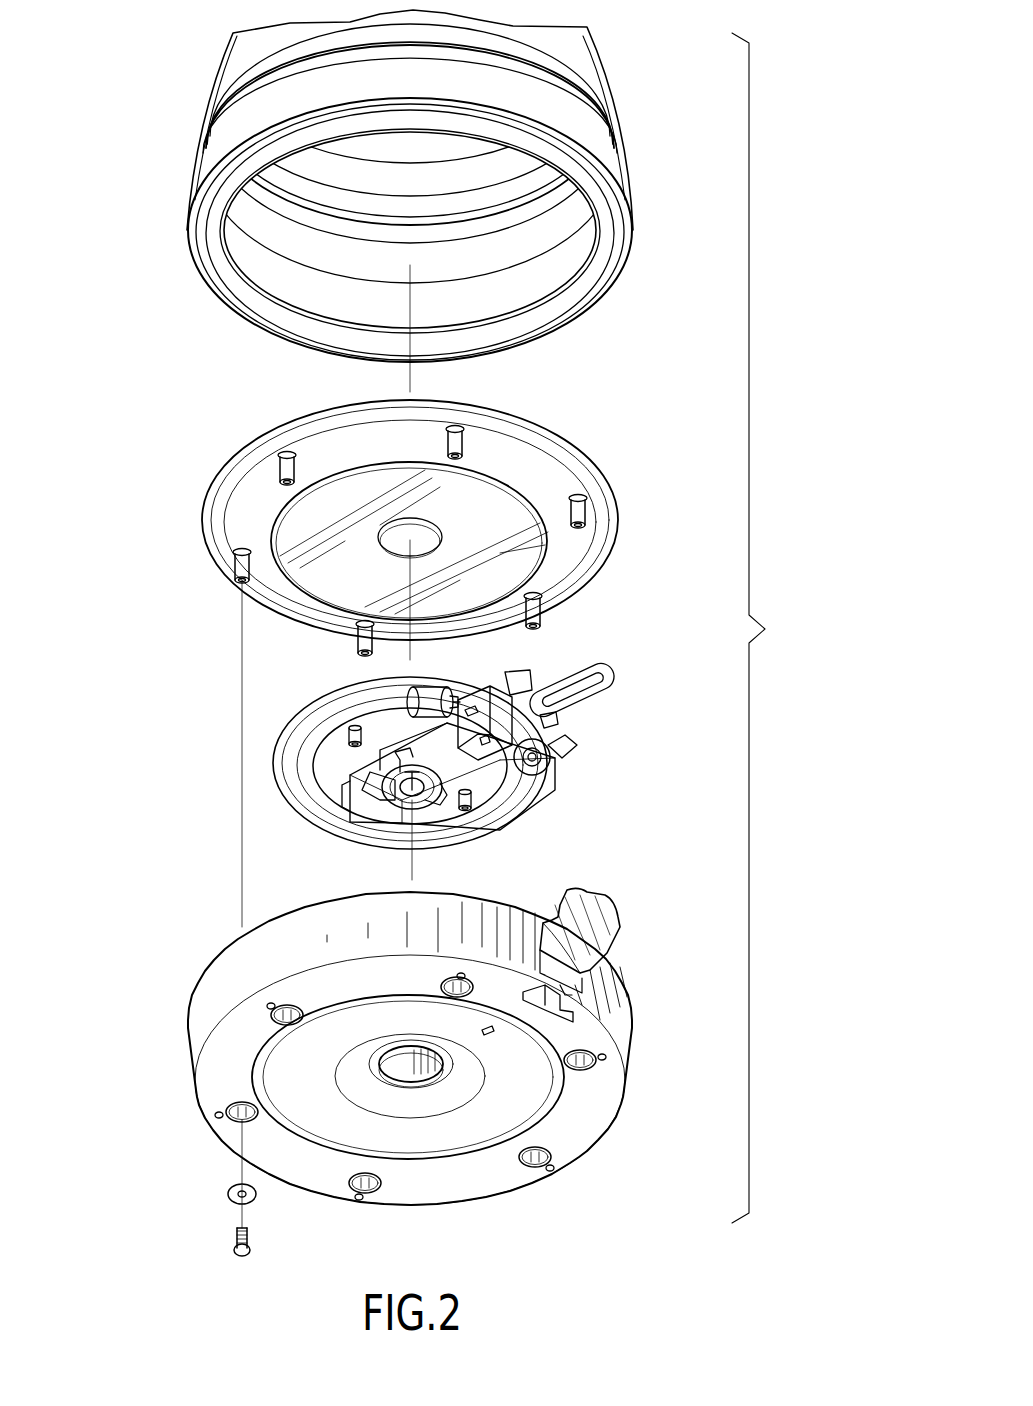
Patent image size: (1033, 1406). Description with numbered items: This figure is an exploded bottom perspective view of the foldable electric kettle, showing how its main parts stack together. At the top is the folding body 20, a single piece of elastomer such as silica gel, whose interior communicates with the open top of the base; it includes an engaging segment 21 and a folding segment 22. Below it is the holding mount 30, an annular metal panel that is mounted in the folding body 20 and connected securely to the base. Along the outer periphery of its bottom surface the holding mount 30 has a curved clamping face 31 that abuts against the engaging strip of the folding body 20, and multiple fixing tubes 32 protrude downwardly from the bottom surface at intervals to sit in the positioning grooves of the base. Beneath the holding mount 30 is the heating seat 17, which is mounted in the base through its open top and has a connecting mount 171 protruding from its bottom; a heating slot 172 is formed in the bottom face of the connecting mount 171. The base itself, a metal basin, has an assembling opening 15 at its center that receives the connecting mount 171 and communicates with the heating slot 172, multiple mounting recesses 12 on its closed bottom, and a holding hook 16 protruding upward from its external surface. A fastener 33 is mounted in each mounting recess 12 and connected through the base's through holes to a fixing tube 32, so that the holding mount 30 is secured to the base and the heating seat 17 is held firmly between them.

The mounting recess 12 is at (525, 1157).
The assembling opening 15 is at (410, 1078).
The holding hook 16 is at (605, 910).
The heating seat 17 is at (340, 713).
The connecting mount 171 is at (393, 803).
The heating slot 172 is at (423, 800).
The folding body 20 is at (189, 67).
The engaging segment 21 is at (209, 243).
The folding segment 22 is at (602, 87).
The holding mount 30 is at (638, 468).
The clamping face 31 is at (605, 525).
The fixing tube 32 is at (287, 468).
The fastener 33 is at (237, 1238).